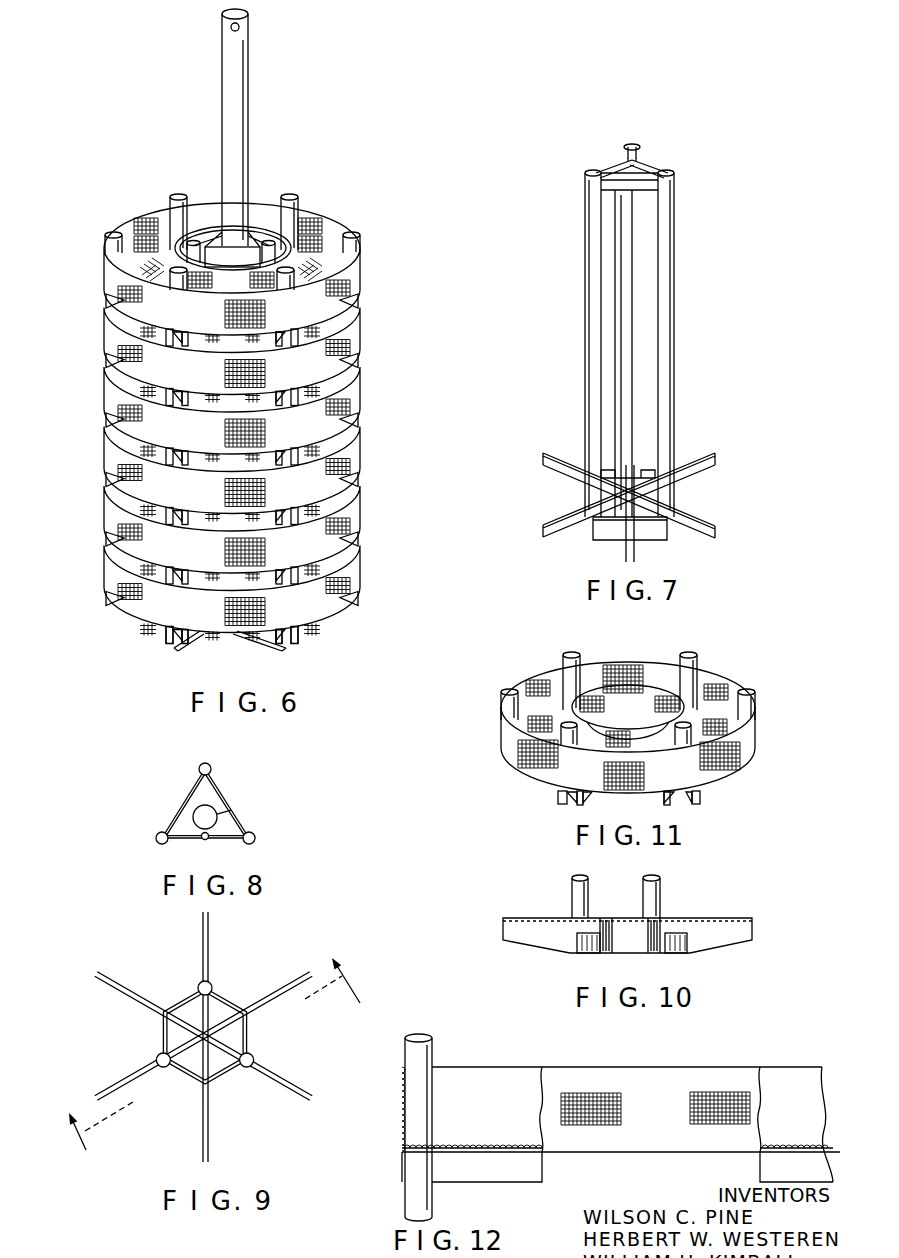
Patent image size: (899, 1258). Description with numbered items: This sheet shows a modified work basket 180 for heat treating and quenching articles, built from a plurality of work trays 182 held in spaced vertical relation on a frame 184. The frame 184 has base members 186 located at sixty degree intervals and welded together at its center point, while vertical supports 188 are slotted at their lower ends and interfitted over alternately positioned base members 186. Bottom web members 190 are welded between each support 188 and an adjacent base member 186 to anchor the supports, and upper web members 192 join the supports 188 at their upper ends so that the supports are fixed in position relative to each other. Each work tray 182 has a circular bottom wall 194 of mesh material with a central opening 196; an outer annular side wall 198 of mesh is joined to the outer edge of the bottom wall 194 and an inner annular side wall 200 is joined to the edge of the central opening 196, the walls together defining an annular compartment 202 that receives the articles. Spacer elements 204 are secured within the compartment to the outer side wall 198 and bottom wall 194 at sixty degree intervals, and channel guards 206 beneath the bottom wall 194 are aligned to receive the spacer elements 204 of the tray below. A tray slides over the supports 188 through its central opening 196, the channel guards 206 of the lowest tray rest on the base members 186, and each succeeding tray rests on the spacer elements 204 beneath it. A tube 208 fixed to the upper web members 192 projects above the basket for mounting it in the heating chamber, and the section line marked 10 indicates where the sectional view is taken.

In FIG. 6, the work basket 180 is at (251, 348).
In FIG. 6, the work tray 182 is at (369, 272).
In FIG. 11, the work tray 182 is at (627, 725).
In FIG. 7, the frame 184 is at (643, 339).
In FIG. 6, the base member 186 is at (188, 640).
In FIG. 7, the base member 186 is at (567, 520).
In FIG. 9, the base member 186 is at (207, 939).
In FIG. 10, the base member 186 is at (748, 925).
In FIG. 6, the vertical support 188 is at (277, 250).
In FIG. 7, the vertical support 188 is at (628, 278).
In FIG. 8, the vertical support 188 is at (207, 766).
In FIG. 9, the vertical support 188 is at (210, 986).
In FIG. 10, the vertical support 188 is at (575, 902).
In FIG. 7, the bottom web member 190 is at (612, 472).
In FIG. 9, the bottom web member 190 is at (162, 1028).
In FIG. 10, the bottom web member 190 is at (590, 943).
In FIG. 7, the upper web member 192 is at (614, 158).
In FIG. 8, the upper web member 192 is at (214, 782).
In FIG. 9, the upper web member 192 is at (189, 988).
In FIG. 12, the circular bottom wall 194 is at (512, 1100).
In FIG. 12, the central opening 196 is at (553, 1150).
In FIG. 12, the outer annular side wall 198 is at (402, 1105).
In FIG. 12, the inner annular side wall 200 is at (545, 1103).
In FIG. 12, the annular compartment 202 is at (800, 1050).
In FIG. 6, the spacer element 204 is at (176, 213).
In FIG. 11, the spacer element 204 is at (572, 655).
In FIG. 12, the spacer element 204 is at (425, 1057).
In FIG. 6, the channel guard 206 is at (195, 641).
In FIG. 11, the channel guard 206 is at (557, 797).
In FIG. 12, the channel guard 206 is at (826, 1165).
In FIG. 6, the tube 208 is at (239, 133).
In FIG. 8, the tube 208 is at (215, 813).
In FIG. 9, the section line 10- 10 is at (222, 1071).